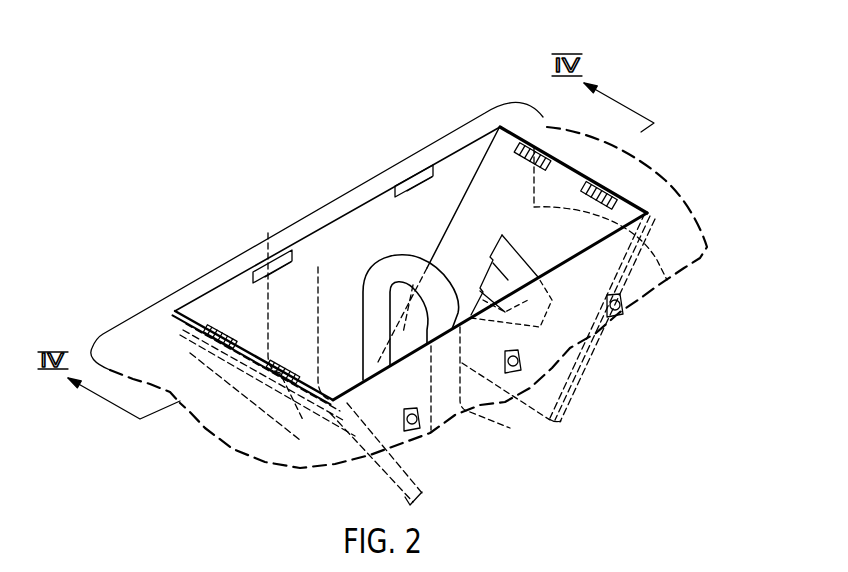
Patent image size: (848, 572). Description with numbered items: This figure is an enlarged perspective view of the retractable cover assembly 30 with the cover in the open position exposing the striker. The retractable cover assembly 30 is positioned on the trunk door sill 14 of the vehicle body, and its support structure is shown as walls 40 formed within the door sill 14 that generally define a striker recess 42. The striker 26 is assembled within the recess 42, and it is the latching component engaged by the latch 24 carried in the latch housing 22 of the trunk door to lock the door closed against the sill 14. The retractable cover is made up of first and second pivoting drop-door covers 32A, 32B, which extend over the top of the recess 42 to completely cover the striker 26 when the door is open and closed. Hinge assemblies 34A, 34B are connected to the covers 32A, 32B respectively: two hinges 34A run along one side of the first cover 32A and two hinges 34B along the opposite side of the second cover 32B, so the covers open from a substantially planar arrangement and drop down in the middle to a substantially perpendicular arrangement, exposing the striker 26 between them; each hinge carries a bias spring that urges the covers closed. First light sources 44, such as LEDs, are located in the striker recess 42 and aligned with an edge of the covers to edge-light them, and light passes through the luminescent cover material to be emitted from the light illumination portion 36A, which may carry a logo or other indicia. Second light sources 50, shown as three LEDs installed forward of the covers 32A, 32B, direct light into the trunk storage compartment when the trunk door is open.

The trunk door sill 14 is at (512, 115).
The latch housing 22 is at (668, 280).
The latch 24 is at (505, 403).
The striker 26 is at (387, 277).
The retractable cover assembly 30 is at (243, 212).
The first pivoting drop-door cover 32A is at (463, 242).
The second pivoting drop-door cover 32B is at (403, 470).
The hinge assemblies (first cover) 34A is at (611, 187).
The hinge assemblies (second cover) 34B is at (277, 376).
The light illumination portion 36A is at (500, 247).
The walls 40 is at (237, 291).
The striker recess 42 is at (206, 306).
The first light sources 44 is at (292, 253).
The second light sources 50 is at (418, 420).